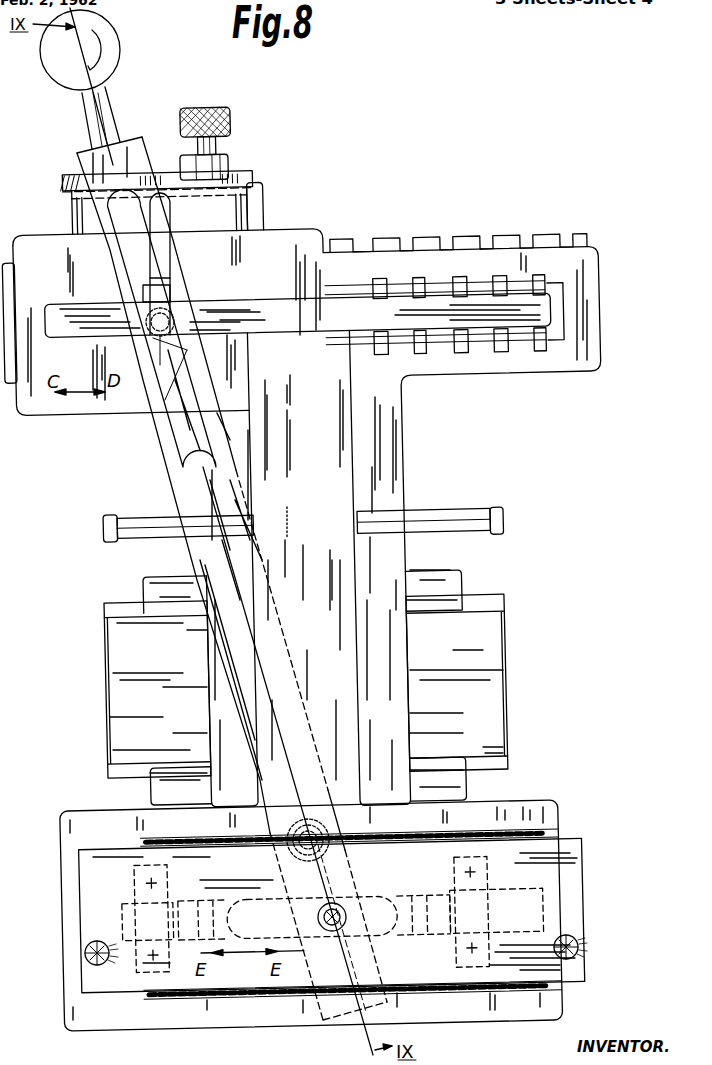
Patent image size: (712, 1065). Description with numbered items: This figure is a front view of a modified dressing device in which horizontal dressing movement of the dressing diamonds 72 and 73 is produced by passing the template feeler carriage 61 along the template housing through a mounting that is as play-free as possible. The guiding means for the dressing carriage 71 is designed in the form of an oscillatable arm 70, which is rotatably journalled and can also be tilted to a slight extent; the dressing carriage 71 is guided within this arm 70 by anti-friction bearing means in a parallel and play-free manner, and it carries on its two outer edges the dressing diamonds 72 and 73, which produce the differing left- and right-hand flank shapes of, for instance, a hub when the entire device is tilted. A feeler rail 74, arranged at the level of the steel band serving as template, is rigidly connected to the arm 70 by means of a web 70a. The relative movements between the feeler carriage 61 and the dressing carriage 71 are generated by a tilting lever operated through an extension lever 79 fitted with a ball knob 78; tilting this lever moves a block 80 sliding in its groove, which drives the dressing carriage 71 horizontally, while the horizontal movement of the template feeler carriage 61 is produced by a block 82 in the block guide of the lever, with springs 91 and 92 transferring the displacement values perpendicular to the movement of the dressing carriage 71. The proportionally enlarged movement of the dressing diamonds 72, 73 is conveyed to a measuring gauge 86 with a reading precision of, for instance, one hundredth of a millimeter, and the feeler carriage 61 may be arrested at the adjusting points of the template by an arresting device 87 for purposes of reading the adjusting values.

The template feeler carriage 61 is at (268, 240).
The oscillatable arm 70 is at (83, 820).
The web 70a is at (340, 698).
The dressing carriage 71 is at (573, 873).
The dressing diamond 72 is at (92, 950).
The dressing diamond 73 is at (568, 946).
The feeler rail 74 is at (537, 318).
The ball knob 78 is at (110, 50).
The extension lever 79 is at (103, 108).
The block 80 is at (342, 902).
The block 82 is at (147, 390).
The measuring gauge 86 is at (221, 163).
The arresting device 87 is at (384, 248).
The spring 91 is at (113, 517).
The spring 92 is at (490, 510).